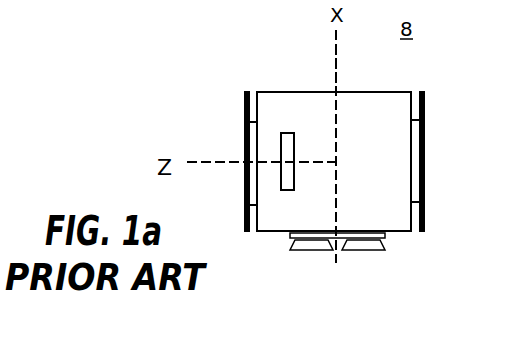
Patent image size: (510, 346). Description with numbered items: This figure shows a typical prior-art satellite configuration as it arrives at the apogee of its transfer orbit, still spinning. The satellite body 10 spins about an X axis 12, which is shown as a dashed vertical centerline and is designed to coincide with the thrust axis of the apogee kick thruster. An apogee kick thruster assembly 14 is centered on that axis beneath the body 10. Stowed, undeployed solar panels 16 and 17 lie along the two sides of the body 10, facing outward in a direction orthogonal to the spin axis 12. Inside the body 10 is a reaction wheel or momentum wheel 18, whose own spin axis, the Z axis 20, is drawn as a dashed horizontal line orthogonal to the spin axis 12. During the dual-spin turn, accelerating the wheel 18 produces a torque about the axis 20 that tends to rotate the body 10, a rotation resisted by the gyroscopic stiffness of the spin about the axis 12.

The satellite body 10 is at (383, 91).
The X axis 12 is at (334, 60).
The apogee kick thruster assembly 14 is at (400, 263).
The stowed solar panel 16 is at (244, 103).
The stowed solar panel 17 is at (426, 202).
The reaction wheel or momentum wheel 18 is at (294, 173).
The Z axis 20 is at (211, 162).